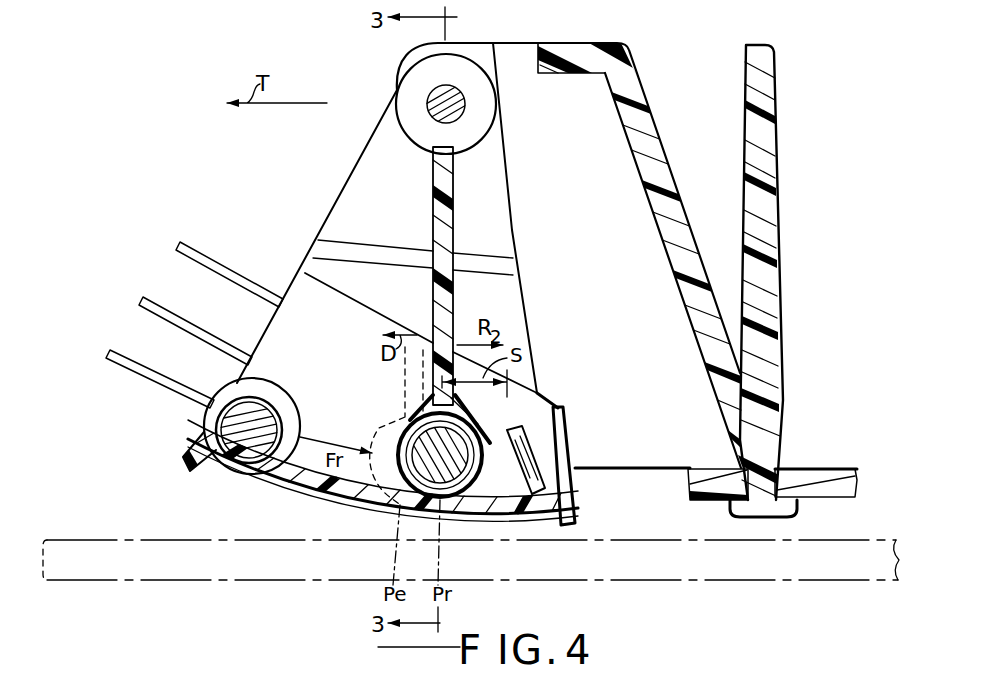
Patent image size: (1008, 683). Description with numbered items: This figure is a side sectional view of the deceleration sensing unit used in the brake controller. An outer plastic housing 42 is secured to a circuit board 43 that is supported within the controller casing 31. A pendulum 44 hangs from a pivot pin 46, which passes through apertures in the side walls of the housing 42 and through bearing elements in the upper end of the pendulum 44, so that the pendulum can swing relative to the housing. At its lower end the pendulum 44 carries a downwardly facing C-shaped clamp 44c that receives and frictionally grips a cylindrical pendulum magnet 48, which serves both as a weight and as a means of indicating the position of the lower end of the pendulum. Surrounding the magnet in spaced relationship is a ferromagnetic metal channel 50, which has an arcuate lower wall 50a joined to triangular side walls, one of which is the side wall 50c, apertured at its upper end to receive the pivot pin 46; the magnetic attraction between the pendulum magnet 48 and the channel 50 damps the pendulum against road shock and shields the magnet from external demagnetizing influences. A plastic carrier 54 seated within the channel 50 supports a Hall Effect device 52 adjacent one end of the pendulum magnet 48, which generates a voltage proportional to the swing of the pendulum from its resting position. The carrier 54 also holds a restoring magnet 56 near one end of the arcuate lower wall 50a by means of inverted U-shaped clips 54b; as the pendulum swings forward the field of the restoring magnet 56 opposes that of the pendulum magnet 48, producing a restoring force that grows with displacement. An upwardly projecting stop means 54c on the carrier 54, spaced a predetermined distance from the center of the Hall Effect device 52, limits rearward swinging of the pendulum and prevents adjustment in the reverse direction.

The controller casing 31 is at (707, 583).
The outer plastic housing 42 is at (776, 117).
The circuit board 43 is at (826, 468).
The pendulum 44 is at (433, 217).
The C-shaped clamp 44c is at (397, 413).
The pivot pin 46 is at (462, 100).
The pendulum magnet 48 is at (467, 498).
The metal channel 50 is at (326, 210).
The arcuate lower wall 50a is at (262, 493).
The side wall 50c is at (505, 227).
The Hall Effect device 52 is at (480, 432).
The plastic carrier 54 is at (268, 330).
The inverted U-shaped clips 54b is at (210, 423).
The stop means 54c is at (533, 458).
The restoring magnet 56 is at (247, 425).